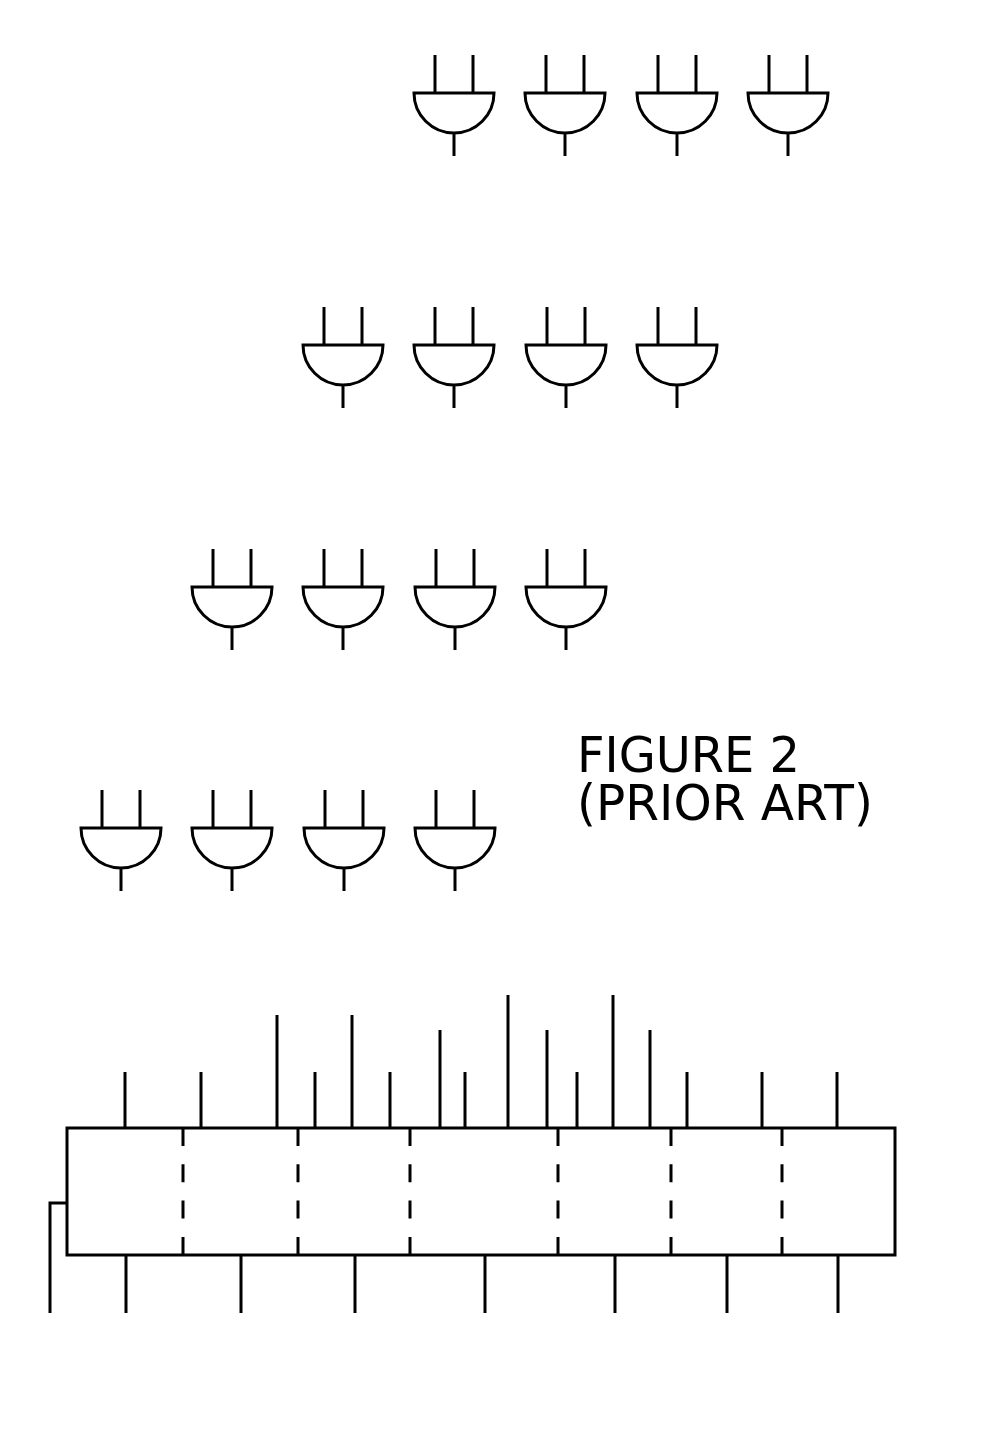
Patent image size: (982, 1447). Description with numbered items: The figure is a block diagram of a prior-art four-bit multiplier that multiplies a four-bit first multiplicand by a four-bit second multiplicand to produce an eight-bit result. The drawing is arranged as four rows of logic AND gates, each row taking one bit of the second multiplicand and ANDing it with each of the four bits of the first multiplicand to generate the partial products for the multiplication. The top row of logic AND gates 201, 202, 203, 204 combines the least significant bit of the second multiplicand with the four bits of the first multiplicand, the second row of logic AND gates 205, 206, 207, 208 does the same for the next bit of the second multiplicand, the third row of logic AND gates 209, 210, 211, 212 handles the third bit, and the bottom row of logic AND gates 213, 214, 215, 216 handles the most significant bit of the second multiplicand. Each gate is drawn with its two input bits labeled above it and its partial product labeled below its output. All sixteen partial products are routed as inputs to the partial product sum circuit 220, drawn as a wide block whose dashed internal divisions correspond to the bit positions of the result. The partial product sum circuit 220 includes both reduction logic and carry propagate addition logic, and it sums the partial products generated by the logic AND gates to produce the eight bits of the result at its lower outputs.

The logic AND gate 201 is at (770, 130).
The logic AND gate 202 is at (659, 130).
The logic AND gate 203 is at (547, 130).
The logic AND gate 204 is at (436, 130).
The logic AND gate 205 is at (659, 382).
The logic AND gate 206 is at (548, 382).
The logic AND gate 207 is at (436, 382).
The logic AND gate 208 is at (325, 382).
The logic AND gate 209 is at (548, 624).
The logic AND gate 210 is at (437, 624).
The logic AND gate 211 is at (325, 624).
The logic AND gate 212 is at (214, 624).
The logic AND gate 213 is at (437, 865).
The logic AND gate 214 is at (326, 865).
The logic AND gate 215 is at (214, 865).
The logic AND gate 216 is at (103, 865).
The partial product sum circuit 220 is at (66, 1147).